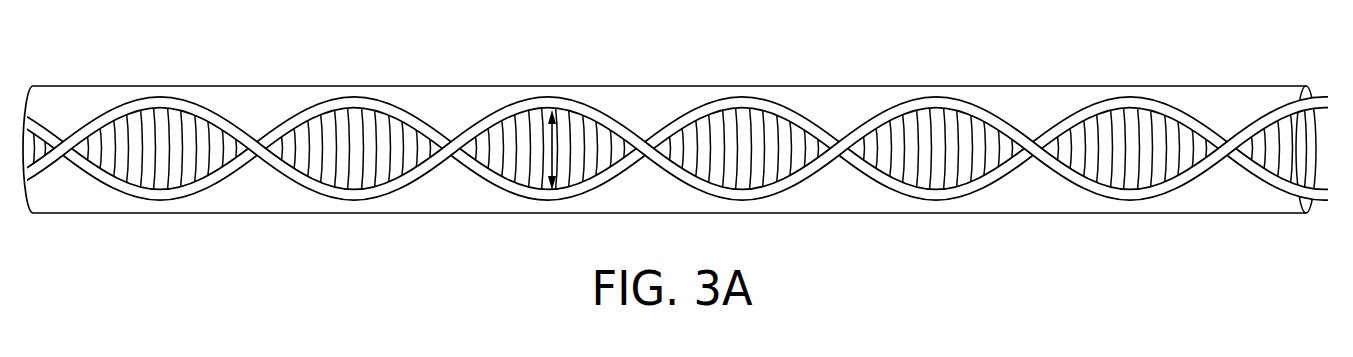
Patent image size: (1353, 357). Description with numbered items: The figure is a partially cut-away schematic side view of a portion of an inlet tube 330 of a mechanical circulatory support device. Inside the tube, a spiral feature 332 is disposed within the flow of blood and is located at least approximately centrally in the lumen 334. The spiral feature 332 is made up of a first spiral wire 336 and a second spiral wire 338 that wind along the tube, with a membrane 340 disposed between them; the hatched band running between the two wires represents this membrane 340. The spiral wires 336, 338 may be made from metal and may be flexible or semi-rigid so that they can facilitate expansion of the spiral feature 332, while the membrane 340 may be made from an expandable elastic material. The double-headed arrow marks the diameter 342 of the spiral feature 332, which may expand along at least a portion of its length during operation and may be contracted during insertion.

The inlet tube 330 is at (271, 86).
The spiral feature 332 is at (676, 162).
The lumen 334 is at (485, 107).
The first spiral wire 336 is at (165, 105).
The second spiral wire 338 is at (402, 118).
The membrane 340 is at (669, 152).
The diameter 342 is at (550, 176).